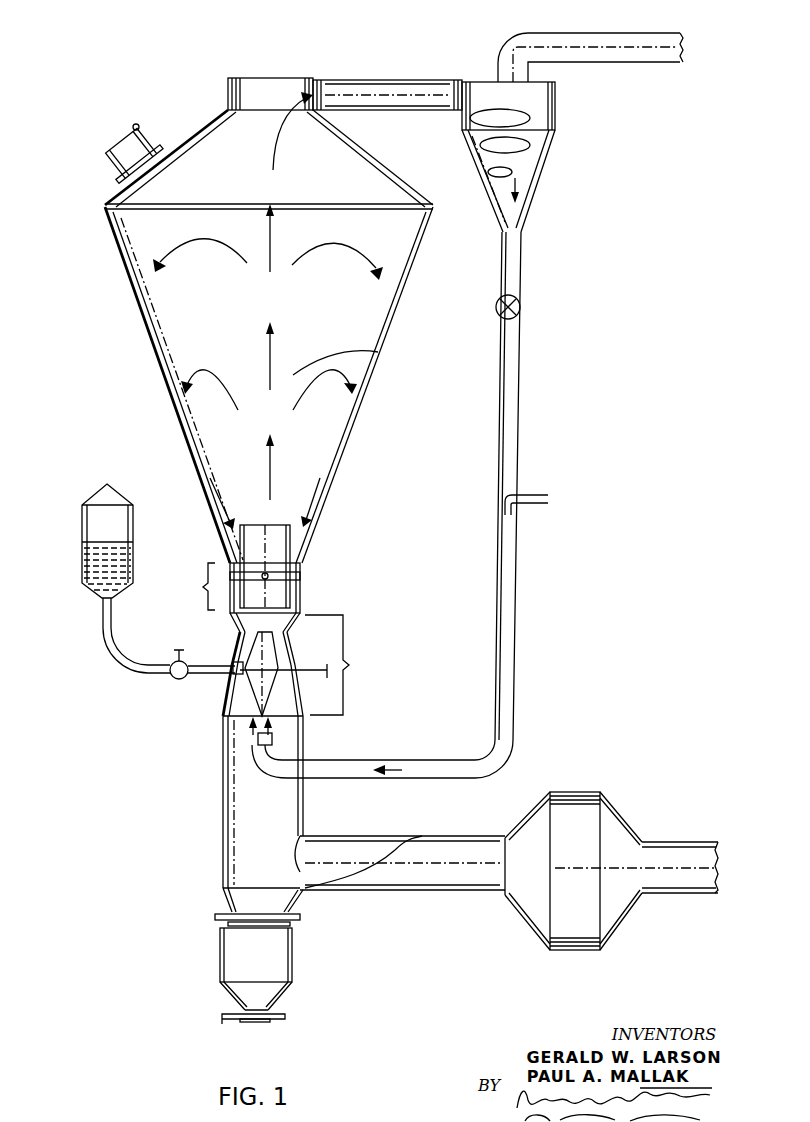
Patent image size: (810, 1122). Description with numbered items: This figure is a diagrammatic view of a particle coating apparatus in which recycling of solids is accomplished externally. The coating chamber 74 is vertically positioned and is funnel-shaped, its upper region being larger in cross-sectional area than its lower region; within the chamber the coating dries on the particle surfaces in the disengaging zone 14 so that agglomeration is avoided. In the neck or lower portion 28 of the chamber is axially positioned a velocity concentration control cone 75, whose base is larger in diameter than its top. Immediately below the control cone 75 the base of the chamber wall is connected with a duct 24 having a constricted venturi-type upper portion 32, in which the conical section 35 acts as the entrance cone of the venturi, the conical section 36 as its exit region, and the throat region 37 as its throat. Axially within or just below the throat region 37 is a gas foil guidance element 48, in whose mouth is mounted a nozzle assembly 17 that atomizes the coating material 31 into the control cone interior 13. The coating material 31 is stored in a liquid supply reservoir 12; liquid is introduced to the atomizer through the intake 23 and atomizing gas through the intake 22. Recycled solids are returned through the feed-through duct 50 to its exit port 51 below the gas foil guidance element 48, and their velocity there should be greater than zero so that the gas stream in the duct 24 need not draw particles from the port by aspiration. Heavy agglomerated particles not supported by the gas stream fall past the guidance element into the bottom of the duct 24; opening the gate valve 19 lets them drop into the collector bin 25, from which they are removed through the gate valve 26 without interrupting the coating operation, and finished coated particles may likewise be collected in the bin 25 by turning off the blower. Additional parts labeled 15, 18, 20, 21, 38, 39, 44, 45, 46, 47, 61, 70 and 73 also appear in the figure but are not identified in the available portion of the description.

The liquid supply reservoir 12 is at (80, 518).
The control cone interior 13 is at (280, 538).
The disengaging zone 14 is at (310, 292).
The flange 15 is at (300, 576).
The nozzle assembly 17 is at (273, 634).
The valve 18 is at (172, 660).
The gate valve 19 is at (218, 912).
The blower 20 is at (612, 815).
The exhaust duct 21 is at (632, 36).
The intake 22 is at (322, 675).
The intake 23 is at (160, 674).
The duct 24 is at (222, 795).
The collector bin 25 is at (218, 962).
The gate valve 26 is at (232, 1022).
The neck or lower portion 28 is at (193, 586).
The coating material 31 is at (82, 570).
The constricted venturi-type upper portion 32 is at (345, 665).
The conical section 35 is at (228, 700).
The conical section 36 is at (232, 625).
The throat region 37 is at (240, 642).
The bottom plate 38 is at (243, 720).
The inlet flange 39 is at (118, 182).
The inlet tube 44 is at (150, 143).
The cyclone separator 45 is at (548, 155).
The valve 46 is at (521, 307).
The air inlet pipe 47 is at (535, 492).
The gas foil guidance element 48 is at (237, 665).
The feed-through duct 50 is at (518, 410).
The exit port 51 is at (273, 740).
The discharge conduit 61 is at (430, 892).
The outlet chamber 70 is at (297, 92).
The conduit 73 is at (396, 88).
The coating chamber 74 is at (167, 372).
The velocity concentration control cone 75 is at (298, 556).